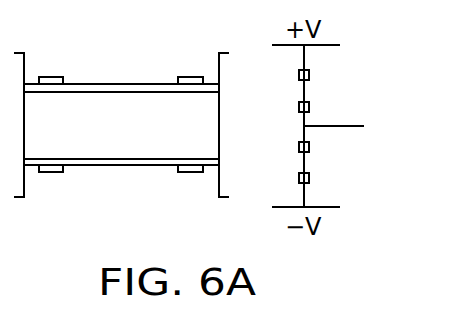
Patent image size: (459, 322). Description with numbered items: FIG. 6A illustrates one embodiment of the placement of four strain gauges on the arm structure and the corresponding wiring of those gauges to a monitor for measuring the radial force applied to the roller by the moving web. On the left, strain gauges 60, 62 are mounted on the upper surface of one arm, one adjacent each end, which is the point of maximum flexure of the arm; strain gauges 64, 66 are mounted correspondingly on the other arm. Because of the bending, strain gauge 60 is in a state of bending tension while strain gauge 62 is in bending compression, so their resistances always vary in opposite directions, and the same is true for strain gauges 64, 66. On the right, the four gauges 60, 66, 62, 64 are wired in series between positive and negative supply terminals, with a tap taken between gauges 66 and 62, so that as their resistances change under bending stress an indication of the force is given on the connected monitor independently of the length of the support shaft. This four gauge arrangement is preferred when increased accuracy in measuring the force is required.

The strain gauge 60 is at (50, 76).
The strain gauge 62 is at (190, 77).
The strain gauge 64 is at (52, 173).
The strain gauge 66 is at (194, 174).